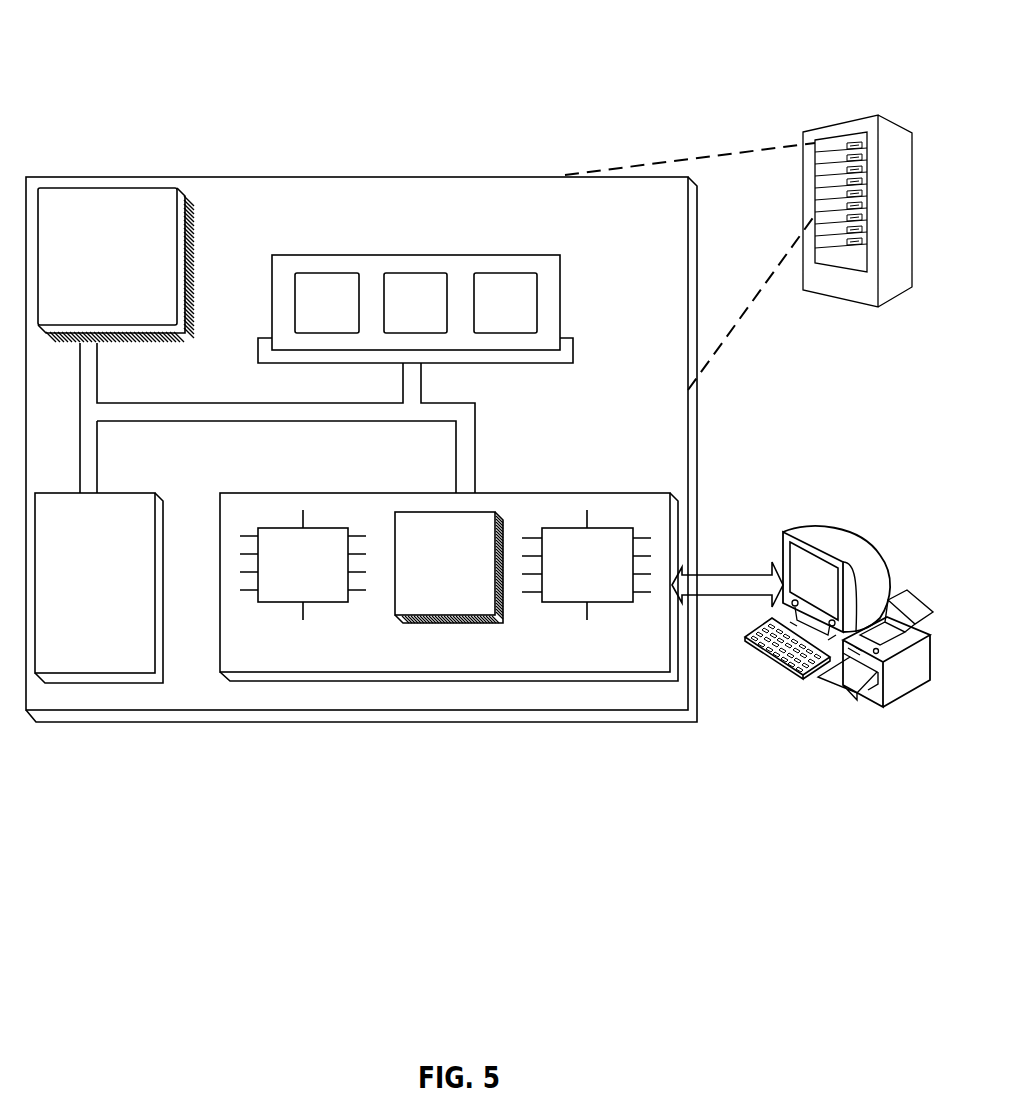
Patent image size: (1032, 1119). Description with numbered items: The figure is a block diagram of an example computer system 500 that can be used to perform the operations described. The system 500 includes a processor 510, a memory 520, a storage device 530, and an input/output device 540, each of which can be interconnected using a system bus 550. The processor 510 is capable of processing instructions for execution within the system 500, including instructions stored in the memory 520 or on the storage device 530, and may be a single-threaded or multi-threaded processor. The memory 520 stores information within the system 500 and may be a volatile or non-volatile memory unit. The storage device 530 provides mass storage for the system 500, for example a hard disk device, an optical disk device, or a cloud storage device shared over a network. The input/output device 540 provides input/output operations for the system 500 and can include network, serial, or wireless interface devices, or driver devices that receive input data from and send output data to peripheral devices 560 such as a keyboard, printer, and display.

The computer system 500 is at (92, 66).
The processor 510 is at (168, 316).
The memory 520 is at (560, 303).
The storage device 530 is at (134, 664).
The input/output device 540 is at (634, 493).
The system bus 550 is at (276, 421).
The peripheral devices 560 is at (788, 531).